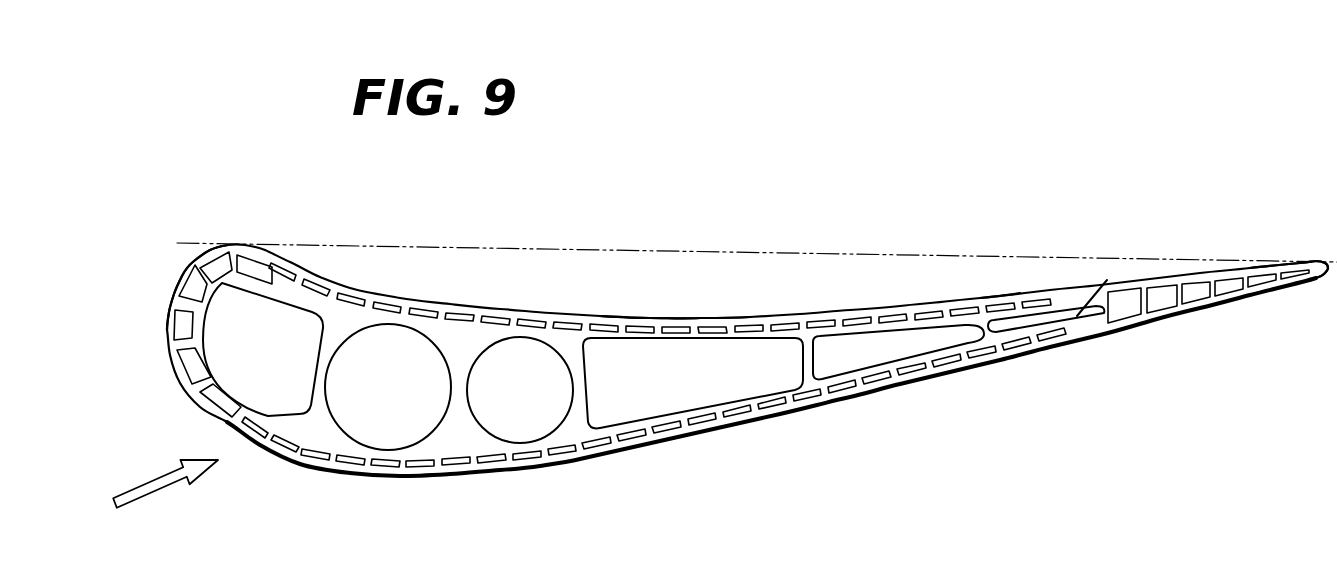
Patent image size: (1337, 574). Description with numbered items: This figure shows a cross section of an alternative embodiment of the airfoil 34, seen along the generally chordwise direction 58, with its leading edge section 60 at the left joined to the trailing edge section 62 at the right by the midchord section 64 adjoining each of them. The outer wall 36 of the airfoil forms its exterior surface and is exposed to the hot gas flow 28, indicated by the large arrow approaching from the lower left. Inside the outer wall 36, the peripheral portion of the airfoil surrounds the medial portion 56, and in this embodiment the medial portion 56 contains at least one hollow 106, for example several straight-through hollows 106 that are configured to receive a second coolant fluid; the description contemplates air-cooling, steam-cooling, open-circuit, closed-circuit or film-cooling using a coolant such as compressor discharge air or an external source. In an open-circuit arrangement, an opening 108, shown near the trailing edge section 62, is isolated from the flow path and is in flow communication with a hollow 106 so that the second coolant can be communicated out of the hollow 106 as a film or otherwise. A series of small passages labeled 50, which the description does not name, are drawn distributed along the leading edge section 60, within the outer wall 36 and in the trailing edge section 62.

The hot gas flow 28 is at (143, 485).
The airfoil 34 is at (302, 213).
The outer wall 36 is at (998, 296).
The cooling passages 50 is at (182, 327).
The medial portion 56 is at (320, 390).
The chordwise direction 58 is at (527, 245).
The leading edge section 60 is at (161, 257).
The trailing edge section 62 is at (1190, 240).
The midchord section 64 is at (677, 297).
The hollow 106 is at (606, 356).
The opening 108 is at (1094, 277).